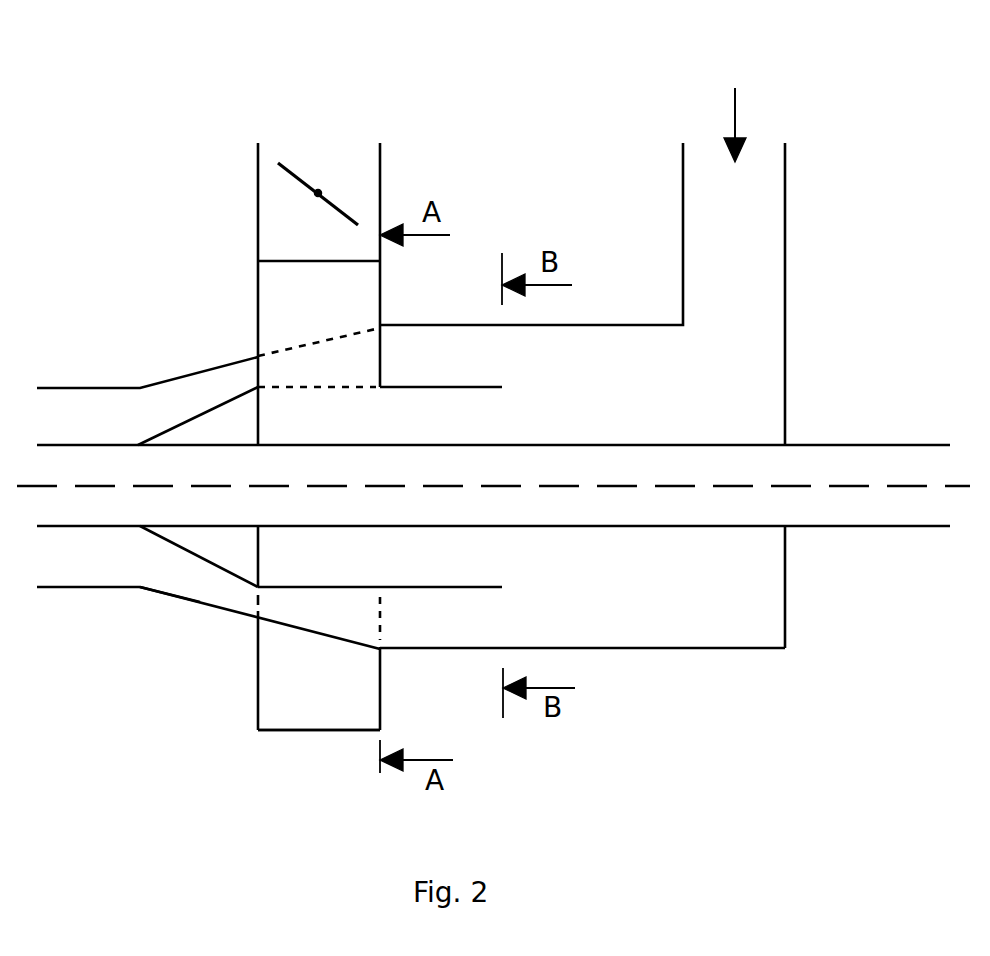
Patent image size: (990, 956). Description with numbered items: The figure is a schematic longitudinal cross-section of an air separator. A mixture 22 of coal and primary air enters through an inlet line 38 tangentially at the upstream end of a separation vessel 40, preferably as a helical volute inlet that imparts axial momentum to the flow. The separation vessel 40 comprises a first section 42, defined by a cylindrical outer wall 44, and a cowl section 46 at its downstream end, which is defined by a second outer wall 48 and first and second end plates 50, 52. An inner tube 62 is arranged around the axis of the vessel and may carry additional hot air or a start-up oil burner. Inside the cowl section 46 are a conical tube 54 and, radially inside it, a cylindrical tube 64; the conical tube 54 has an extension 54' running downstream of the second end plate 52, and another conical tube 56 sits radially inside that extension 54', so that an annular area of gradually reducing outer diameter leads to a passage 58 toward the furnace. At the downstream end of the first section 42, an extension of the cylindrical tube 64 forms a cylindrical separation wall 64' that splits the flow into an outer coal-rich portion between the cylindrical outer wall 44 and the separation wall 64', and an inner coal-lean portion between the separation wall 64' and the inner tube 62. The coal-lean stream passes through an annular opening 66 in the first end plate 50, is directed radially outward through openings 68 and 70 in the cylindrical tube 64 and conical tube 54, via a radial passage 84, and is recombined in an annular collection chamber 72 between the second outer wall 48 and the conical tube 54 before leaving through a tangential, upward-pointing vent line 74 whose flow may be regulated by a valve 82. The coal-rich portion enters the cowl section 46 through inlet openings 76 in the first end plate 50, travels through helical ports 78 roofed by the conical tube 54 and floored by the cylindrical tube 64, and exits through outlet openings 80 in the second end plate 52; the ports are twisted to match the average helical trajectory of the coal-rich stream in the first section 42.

The mixture of coal and primary air 22 is at (735, 115).
The inlet line 38 is at (770, 260).
The separation vessel 40 is at (560, 125).
The first section 42 is at (633, 623).
The cylindrical outer wall 44 is at (740, 650).
The cowl section 46 is at (332, 707).
The second outer wall 48 is at (293, 732).
The first end plate 50 is at (383, 677).
The second end plate 52 is at (260, 702).
The conical tube 54 is at (260, 651).
The extension of the conical tube 54' is at (156, 621).
The another conical tube 56 is at (173, 547).
The passage 58 is at (87, 592).
The inner tube 62 is at (680, 445).
The cylindrical tube 64 is at (322, 564).
The cylindrical separation wall 64' is at (453, 564).
The annular opening 66 is at (383, 428).
The openings in the cylindrical tube 68 is at (296, 390).
The openings in the conical tube 70 is at (333, 332).
The annular collection chamber 72 is at (273, 328).
The vent line 74 is at (367, 175).
The inlet openings 76 is at (385, 623).
The helical ports 78 is at (322, 612).
The outlet openings 80 is at (258, 598).
The valve 82 is at (300, 184).
The radial passage 84 is at (316, 365).